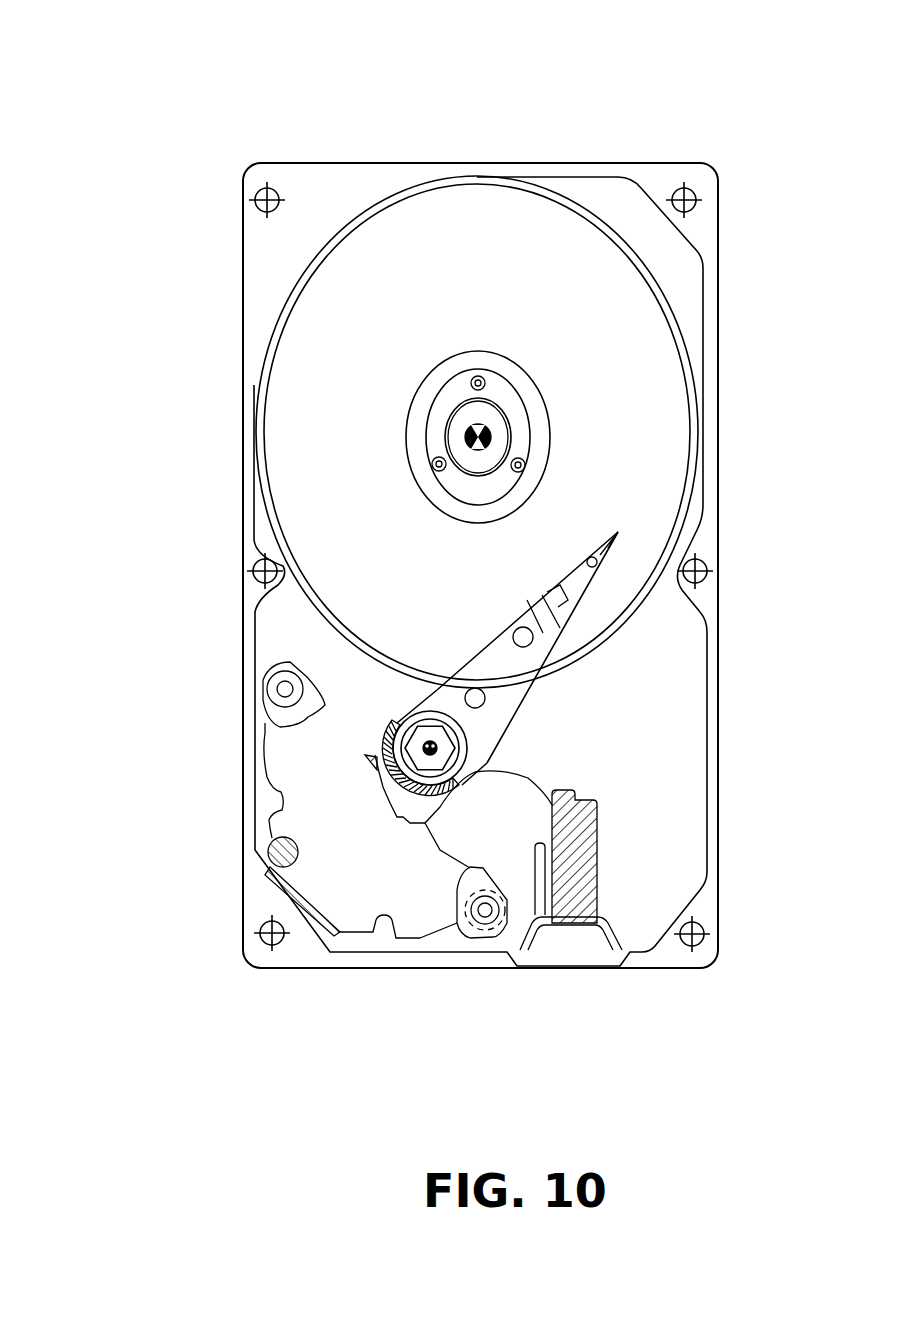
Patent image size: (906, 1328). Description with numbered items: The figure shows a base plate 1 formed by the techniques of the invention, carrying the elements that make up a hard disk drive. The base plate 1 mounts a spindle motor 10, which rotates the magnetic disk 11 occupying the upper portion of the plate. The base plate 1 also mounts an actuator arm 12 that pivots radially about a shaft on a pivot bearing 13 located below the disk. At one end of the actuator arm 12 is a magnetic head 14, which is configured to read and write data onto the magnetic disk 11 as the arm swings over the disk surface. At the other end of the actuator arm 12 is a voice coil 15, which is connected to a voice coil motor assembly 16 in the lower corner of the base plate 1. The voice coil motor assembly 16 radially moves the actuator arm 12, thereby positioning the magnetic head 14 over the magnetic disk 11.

The base plate 1 is at (140, 188).
The spindle motor 10 is at (523, 425).
The magnetic disk 11 is at (603, 320).
The actuator arm 12 is at (512, 667).
The pivot bearing 13 is at (425, 745).
The magnetic head 14 is at (623, 530).
The voice coil 15 is at (275, 859).
The voice coil motor assembly 16 is at (421, 915).